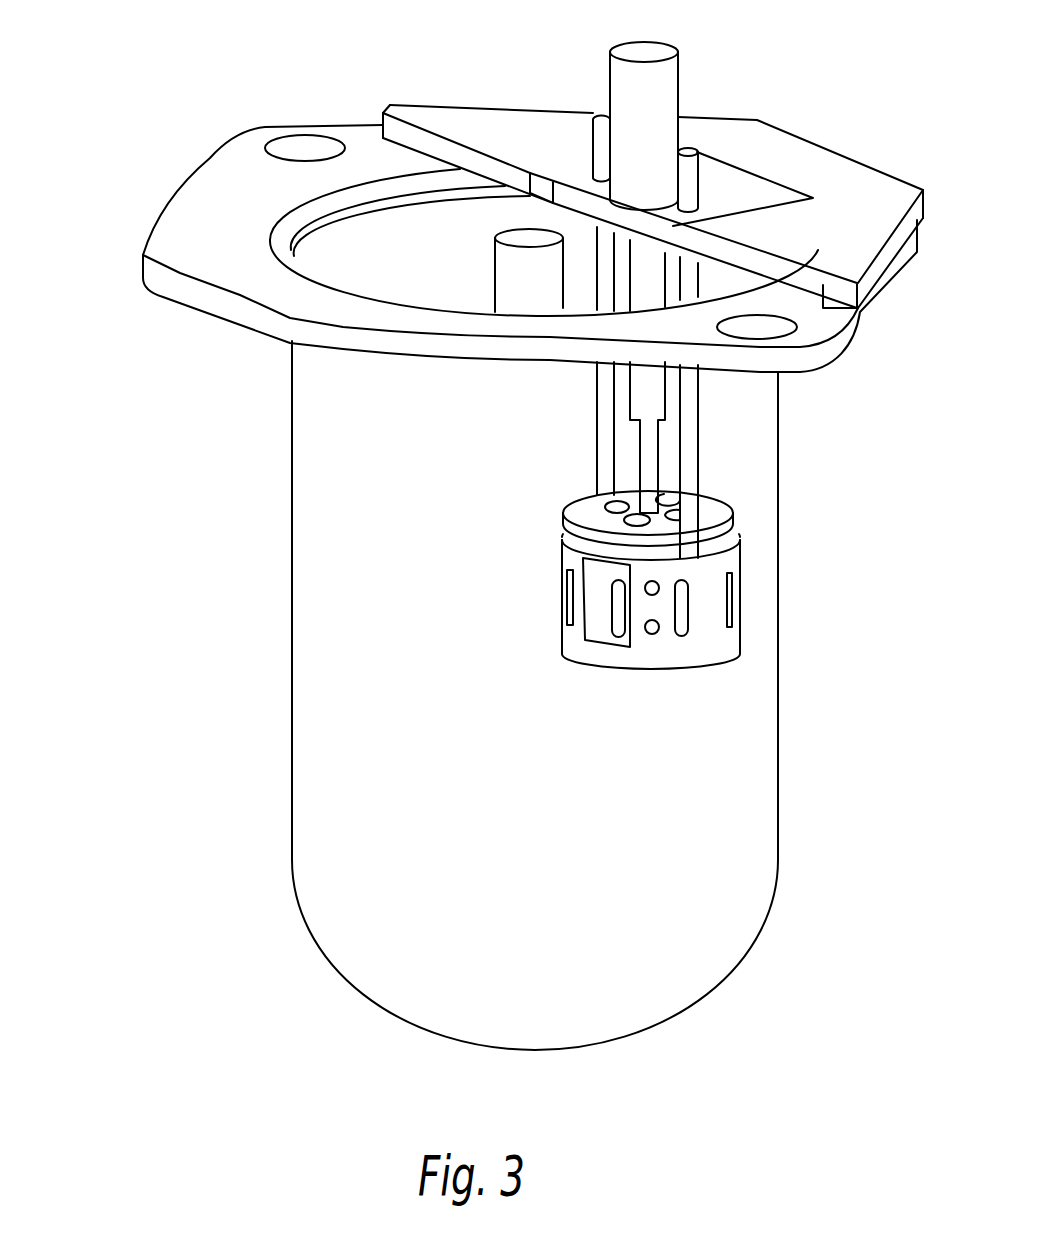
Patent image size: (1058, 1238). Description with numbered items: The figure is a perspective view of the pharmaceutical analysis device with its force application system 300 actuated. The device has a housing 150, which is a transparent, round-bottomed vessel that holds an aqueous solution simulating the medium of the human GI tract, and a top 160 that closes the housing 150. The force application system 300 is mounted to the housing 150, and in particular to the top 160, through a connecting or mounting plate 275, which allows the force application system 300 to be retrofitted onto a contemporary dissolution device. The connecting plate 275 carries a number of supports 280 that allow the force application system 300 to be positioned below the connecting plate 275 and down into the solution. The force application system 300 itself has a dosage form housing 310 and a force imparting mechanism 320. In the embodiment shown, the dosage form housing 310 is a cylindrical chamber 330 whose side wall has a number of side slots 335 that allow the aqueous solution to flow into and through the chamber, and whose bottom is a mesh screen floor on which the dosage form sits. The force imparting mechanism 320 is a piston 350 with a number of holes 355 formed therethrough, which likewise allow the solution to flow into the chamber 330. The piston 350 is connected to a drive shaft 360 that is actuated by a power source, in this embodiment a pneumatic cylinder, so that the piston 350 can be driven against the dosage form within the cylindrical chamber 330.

The housing 150 is at (318, 787).
The top 160 is at (208, 215).
The connecting plate 275 is at (842, 178).
The supports 280 is at (605, 400).
The force application system 300 is at (533, 636).
The dosage form housing 310 is at (687, 647).
The force imparting mechanism 320 is at (718, 532).
The cylindrical chamber 330 is at (653, 651).
The side slots 335 is at (717, 610).
The piston 350 is at (533, 488).
The holes 355 is at (600, 494).
The drive shaft 360 is at (650, 437).